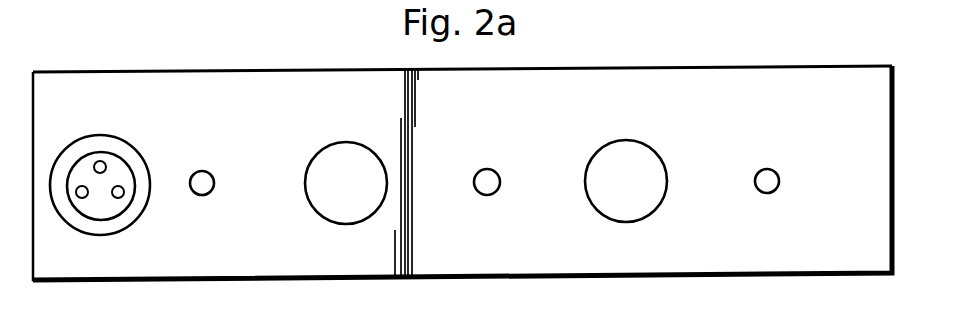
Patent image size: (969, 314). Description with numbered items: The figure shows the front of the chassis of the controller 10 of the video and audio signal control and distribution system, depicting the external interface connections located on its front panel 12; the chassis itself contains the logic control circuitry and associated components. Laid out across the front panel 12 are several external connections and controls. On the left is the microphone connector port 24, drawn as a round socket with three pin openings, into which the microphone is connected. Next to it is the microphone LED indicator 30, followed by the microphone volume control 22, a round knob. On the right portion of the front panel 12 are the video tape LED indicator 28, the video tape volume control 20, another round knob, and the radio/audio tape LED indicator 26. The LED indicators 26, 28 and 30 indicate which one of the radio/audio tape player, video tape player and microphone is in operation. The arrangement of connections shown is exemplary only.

The controller 10 is at (462, 140).
The front panel 12 is at (822, 82).
The video tape volume control 20 is at (636, 191).
The microphone volume control 22 is at (359, 189).
The microphone connector port 24 is at (130, 156).
The radio/audio tape LED indicator 26 is at (779, 181).
The video tape LED indicator 28 is at (496, 171).
The microphone LED indicator 30 is at (210, 174).